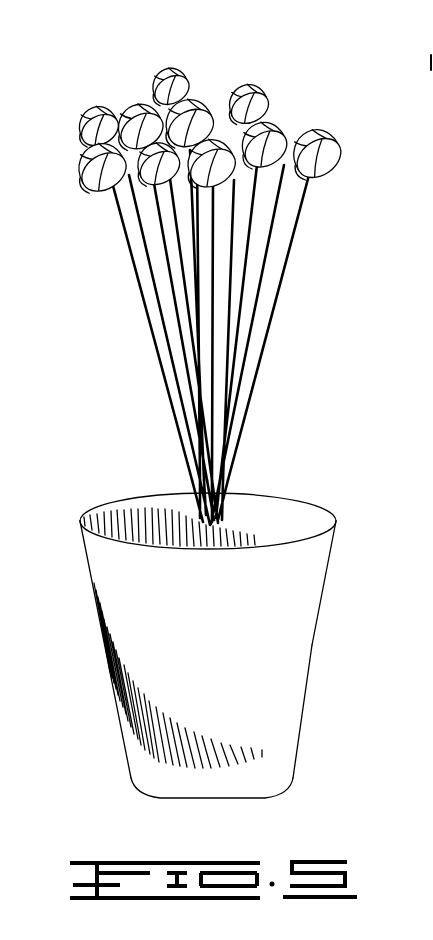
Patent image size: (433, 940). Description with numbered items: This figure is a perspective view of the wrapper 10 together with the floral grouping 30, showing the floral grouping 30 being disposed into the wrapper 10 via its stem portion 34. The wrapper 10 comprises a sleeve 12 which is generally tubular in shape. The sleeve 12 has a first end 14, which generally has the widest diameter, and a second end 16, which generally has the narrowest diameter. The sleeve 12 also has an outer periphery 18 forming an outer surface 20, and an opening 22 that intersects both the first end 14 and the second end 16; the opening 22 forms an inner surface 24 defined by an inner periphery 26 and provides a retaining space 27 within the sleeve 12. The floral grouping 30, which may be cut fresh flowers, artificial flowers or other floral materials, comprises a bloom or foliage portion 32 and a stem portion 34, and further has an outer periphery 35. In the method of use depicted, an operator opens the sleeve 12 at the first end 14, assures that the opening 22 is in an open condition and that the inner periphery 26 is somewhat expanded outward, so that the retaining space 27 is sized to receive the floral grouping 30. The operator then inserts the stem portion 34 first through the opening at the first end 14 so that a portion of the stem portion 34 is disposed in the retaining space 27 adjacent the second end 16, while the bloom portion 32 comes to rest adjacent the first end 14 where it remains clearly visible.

The wrapper 10 is at (103, 427).
The sleeve 12 is at (320, 495).
The first end 14 is at (82, 516).
The second end 16 is at (238, 800).
The outer periphery 18 is at (290, 678).
The outer surface 20 is at (143, 750).
The opening 22 is at (313, 527).
The inner surface 24 is at (128, 513).
The inner periphery 26 is at (180, 513).
The retaining space 27 is at (267, 510).
The floral grouping 30 is at (252, 81).
The bloom or foliage portion 32 is at (293, 112).
The stem portion 34 is at (242, 487).
The outer periphery 35 is at (281, 298).